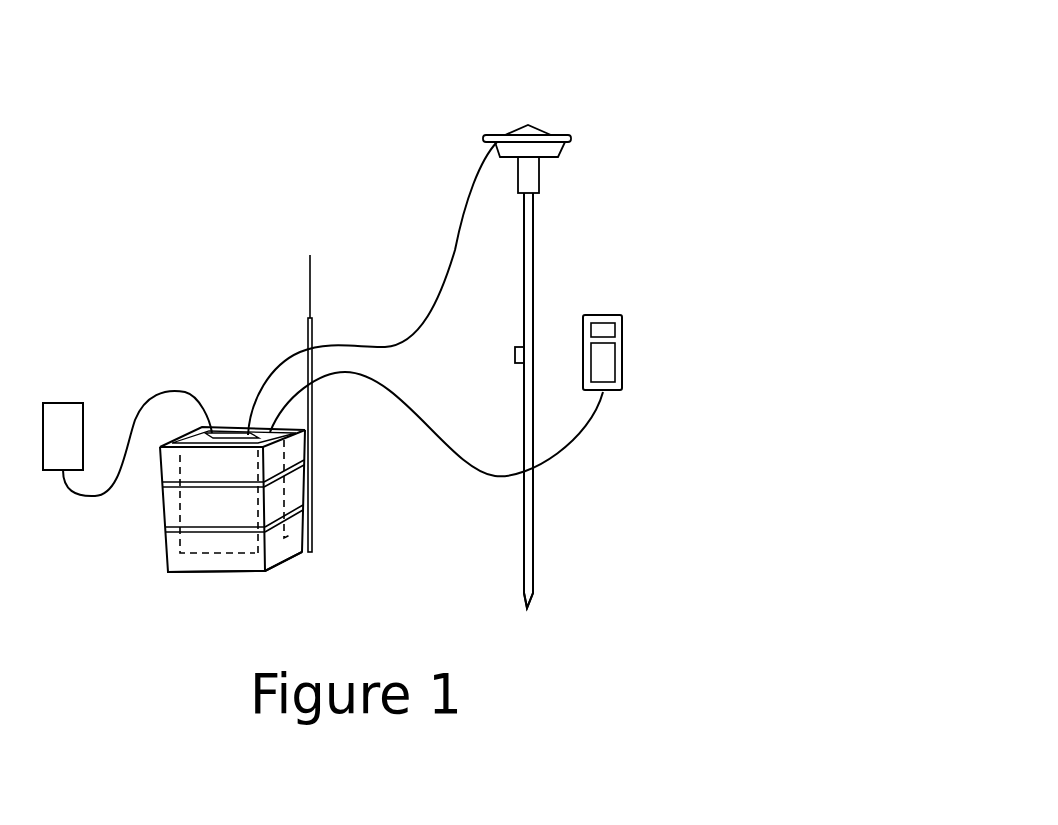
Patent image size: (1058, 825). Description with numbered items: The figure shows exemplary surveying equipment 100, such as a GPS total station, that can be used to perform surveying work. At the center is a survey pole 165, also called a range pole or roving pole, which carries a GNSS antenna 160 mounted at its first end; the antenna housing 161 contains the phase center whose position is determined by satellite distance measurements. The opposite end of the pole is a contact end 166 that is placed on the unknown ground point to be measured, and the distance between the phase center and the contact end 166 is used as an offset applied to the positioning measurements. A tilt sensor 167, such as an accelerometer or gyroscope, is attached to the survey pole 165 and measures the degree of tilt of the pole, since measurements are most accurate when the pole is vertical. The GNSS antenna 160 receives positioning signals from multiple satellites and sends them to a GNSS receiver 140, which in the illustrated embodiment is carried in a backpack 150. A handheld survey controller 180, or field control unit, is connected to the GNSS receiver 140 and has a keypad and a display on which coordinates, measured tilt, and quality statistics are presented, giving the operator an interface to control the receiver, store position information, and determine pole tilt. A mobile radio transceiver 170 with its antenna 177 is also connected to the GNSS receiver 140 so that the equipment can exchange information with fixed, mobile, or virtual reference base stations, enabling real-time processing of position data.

The surveying equipment 100 is at (774, 132).
The GNSS receiver 140 is at (195, 507).
The backpack 150 is at (282, 571).
The GNSS antenna 160 is at (548, 130).
The antenna housing 161 is at (564, 147).
The survey pole 165 is at (535, 258).
The contact end 166 is at (537, 603).
The tilt sensor 167 is at (513, 357).
The mobile radio transceiver 170 is at (63, 402).
The antenna 177 is at (310, 280).
The handheld survey controller 180 is at (625, 353).